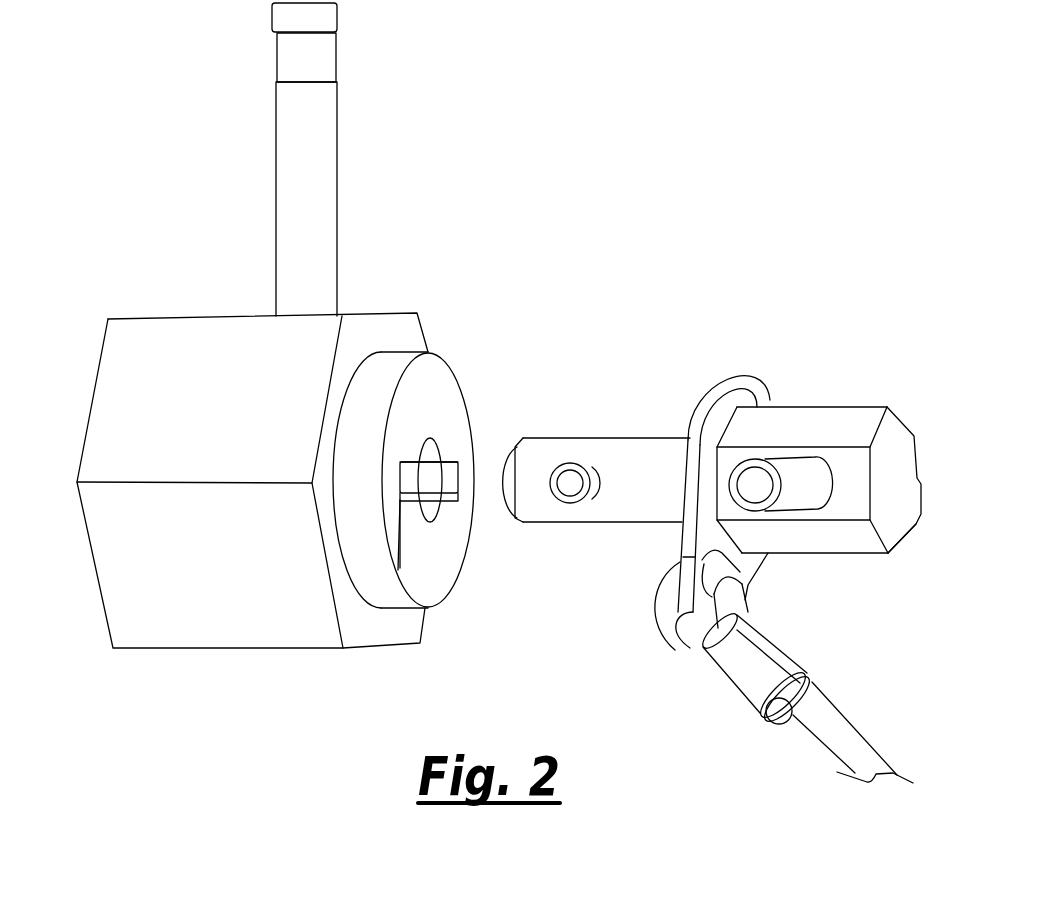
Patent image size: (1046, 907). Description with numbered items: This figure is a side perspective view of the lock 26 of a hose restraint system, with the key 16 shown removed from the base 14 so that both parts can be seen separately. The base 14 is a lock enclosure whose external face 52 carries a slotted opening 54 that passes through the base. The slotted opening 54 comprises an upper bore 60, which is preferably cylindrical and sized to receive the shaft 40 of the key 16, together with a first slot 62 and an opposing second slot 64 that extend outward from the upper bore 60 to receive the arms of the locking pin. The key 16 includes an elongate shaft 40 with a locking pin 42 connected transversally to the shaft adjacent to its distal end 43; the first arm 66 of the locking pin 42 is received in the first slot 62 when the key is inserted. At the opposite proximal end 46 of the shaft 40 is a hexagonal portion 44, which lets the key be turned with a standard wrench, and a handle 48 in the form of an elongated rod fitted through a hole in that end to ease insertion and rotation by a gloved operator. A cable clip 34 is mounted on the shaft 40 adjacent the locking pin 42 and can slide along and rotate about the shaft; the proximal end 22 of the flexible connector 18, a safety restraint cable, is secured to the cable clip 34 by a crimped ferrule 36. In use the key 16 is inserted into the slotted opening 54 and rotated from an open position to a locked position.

The lock 26 is at (595, 162).
The base 14 is at (442, 289).
The external face 52 is at (447, 582).
The upper bore 60 is at (432, 438).
The second slot 64 is at (460, 480).
The first slot 62 is at (400, 568).
The slotted opening 54 is at (466, 451).
The key 16 is at (737, 321).
The elongate shaft 40 is at (648, 440).
The distal end (first end) of shaft 43 is at (516, 513).
The locking pin 42 is at (575, 463).
The first arm 66 is at (568, 505).
The hexagonal portion 44 is at (887, 405).
The handle 48 is at (772, 462).
The proximal end (second end) of shaft 46 is at (896, 537).
The cable clip 34 is at (683, 533).
The proximal end of flexible connector 22 is at (743, 592).
The crimped ferrule 36 is at (740, 698).
The flexible connector 18 is at (828, 740).